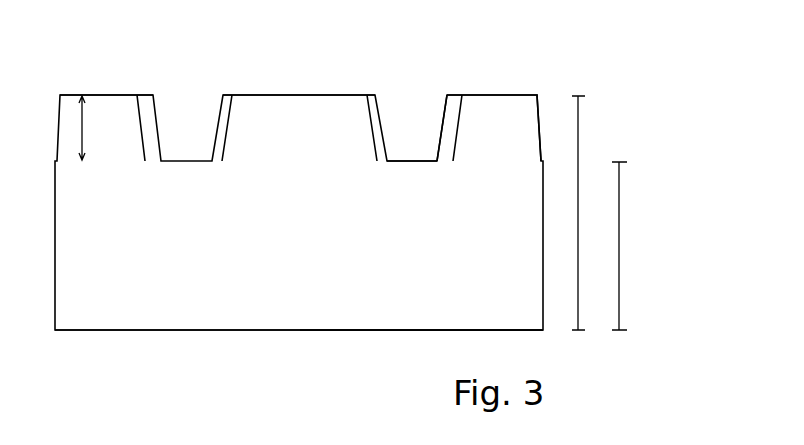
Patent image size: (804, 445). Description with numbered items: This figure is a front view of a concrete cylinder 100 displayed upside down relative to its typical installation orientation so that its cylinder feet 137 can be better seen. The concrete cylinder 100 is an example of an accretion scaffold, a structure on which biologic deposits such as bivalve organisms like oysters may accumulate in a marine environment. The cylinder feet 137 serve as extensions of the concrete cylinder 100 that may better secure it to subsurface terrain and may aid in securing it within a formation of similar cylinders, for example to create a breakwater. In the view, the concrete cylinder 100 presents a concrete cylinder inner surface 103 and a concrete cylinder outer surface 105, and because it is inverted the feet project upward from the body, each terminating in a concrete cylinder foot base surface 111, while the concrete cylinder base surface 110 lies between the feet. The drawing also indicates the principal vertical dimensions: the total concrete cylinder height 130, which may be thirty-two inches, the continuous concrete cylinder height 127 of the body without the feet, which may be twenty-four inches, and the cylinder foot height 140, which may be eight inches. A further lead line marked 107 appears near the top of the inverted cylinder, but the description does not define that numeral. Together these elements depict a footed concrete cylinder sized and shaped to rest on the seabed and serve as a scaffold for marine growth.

The concrete cylinder 100 is at (298, 315).
The concrete cylinder inner surface 103 is at (325, 108).
The concrete cylinder outer surface 105 is at (397, 313).
The bottom surface of substrate 107 is at (183, 330).
The concrete cylinder base surface 110 is at (417, 161).
The concrete cylinder foot base surface 111 is at (498, 95).
The continuous concrete cylinder height 127 is at (619, 185).
The total concrete cylinder height 130 is at (578, 132).
The cylinder feet 137 is at (110, 113).
The cylinder foot height 140 is at (82, 130).